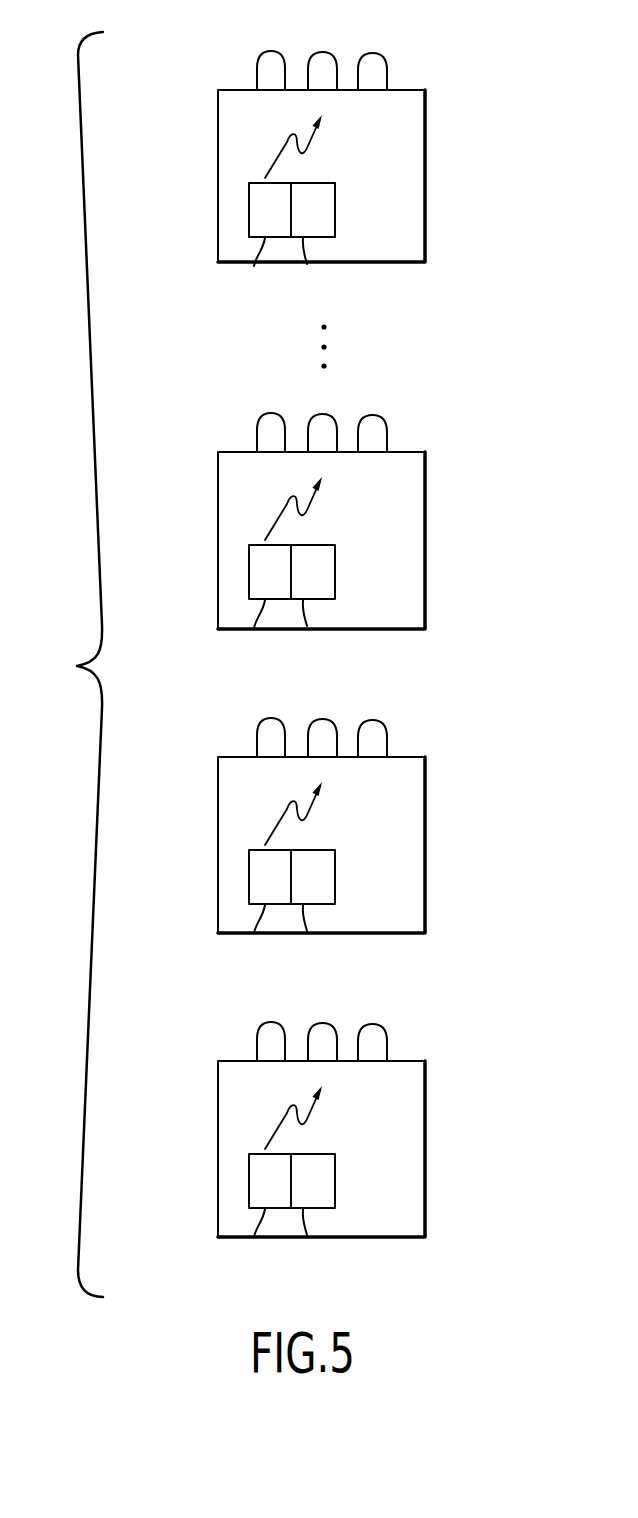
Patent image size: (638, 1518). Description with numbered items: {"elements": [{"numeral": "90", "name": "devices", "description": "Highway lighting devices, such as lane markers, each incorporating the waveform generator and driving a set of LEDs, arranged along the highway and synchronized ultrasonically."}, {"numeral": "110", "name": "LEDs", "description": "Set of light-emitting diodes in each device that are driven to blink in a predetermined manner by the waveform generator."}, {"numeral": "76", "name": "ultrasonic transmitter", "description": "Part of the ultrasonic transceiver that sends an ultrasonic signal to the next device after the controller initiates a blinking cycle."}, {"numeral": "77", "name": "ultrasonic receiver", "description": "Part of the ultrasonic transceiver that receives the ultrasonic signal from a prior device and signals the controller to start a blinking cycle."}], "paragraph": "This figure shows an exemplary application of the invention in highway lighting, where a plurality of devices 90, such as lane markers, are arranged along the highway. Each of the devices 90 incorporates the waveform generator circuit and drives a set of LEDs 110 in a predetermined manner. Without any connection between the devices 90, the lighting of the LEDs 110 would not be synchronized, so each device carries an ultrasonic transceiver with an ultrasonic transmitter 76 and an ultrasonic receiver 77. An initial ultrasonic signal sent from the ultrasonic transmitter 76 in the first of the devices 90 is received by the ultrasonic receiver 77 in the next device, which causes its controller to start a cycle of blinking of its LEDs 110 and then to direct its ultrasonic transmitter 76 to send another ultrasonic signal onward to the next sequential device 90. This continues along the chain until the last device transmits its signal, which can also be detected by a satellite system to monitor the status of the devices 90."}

The ultrasonic sensor unit 90 is at (425, 137).
The ultrasonic transducers 110 is at (257, 72).
The first connection line 76 is at (254, 266).
The second connection line 77 is at (307, 264).